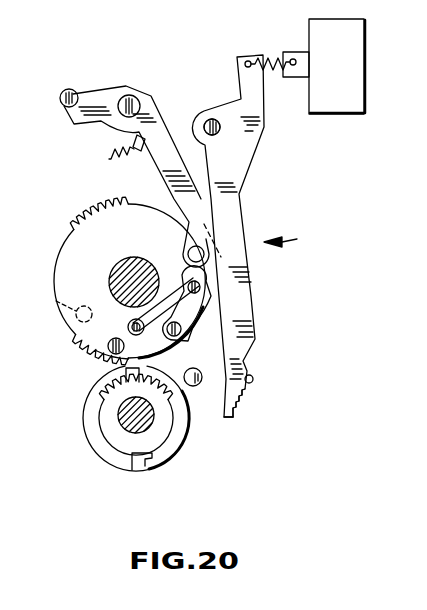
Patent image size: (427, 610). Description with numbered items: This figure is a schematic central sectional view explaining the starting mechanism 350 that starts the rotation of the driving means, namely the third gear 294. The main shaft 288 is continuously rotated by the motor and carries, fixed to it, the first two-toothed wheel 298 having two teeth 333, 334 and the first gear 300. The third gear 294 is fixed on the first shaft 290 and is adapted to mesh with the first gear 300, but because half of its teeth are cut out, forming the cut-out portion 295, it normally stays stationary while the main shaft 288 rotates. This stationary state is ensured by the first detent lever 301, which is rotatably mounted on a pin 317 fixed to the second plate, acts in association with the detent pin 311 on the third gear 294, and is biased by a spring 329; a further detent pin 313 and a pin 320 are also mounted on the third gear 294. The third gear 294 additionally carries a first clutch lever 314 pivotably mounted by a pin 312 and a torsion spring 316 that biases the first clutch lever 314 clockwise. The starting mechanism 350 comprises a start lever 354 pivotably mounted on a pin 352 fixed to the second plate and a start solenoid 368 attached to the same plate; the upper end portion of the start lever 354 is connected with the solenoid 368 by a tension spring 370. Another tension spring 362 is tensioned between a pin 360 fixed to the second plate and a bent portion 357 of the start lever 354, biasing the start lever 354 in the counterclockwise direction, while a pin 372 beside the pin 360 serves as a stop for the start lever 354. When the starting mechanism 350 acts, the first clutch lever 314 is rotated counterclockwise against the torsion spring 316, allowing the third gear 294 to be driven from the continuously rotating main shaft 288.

The main shaft 288 is at (122, 430).
The first shaft 290 is at (124, 262).
The third gear 294 is at (77, 226).
The cut-out portion 295 is at (100, 370).
The first two-toothed wheel 298 is at (113, 457).
The first gear 300 is at (103, 379).
The first detent lever 301 is at (152, 108).
The detent pin 311 is at (176, 240).
The pin 312 is at (180, 333).
The detent pin 313 is at (55, 305).
The first clutch lever 314 is at (183, 309).
The torsion spring 316 is at (178, 251).
The pin 317 is at (128, 97).
The pin 320 is at (107, 347).
The spring 329 is at (108, 160).
The tooth 333 is at (123, 384).
The tooth 334 is at (138, 464).
The starting mechanism 350 is at (303, 243).
The pin 352 is at (210, 122).
The start lever 354 is at (238, 194).
The bent portion 357 is at (233, 420).
The pin 360 is at (253, 379).
The tension spring 362 is at (241, 400).
The start solenoid 368 is at (348, 69).
The tension spring 370 is at (265, 60).
The pin 372 is at (198, 387).